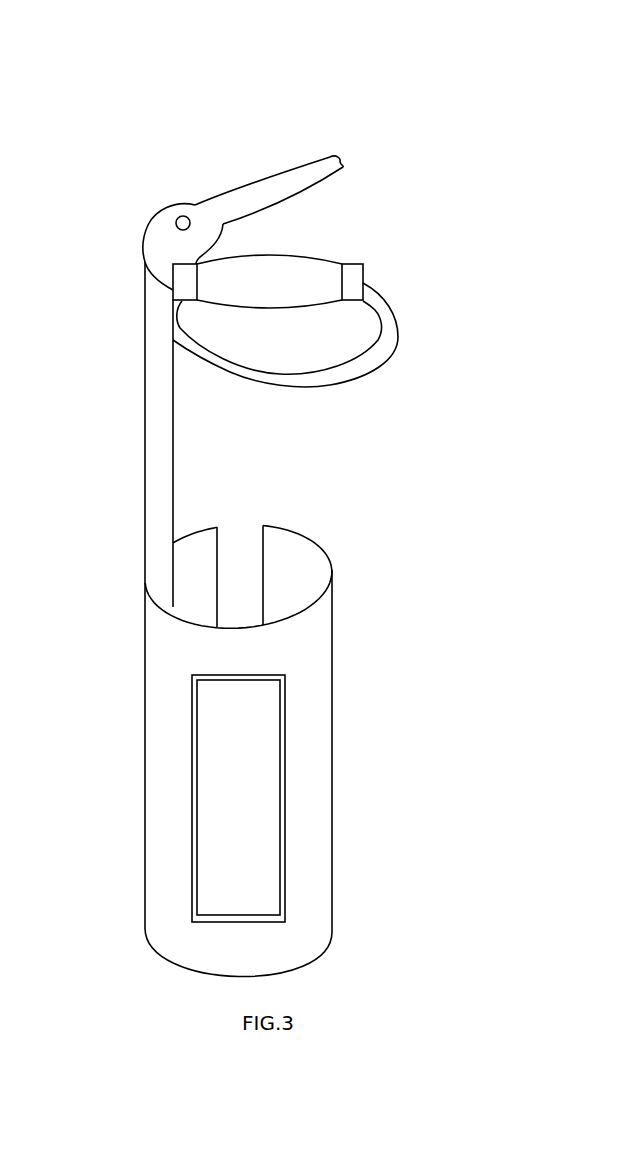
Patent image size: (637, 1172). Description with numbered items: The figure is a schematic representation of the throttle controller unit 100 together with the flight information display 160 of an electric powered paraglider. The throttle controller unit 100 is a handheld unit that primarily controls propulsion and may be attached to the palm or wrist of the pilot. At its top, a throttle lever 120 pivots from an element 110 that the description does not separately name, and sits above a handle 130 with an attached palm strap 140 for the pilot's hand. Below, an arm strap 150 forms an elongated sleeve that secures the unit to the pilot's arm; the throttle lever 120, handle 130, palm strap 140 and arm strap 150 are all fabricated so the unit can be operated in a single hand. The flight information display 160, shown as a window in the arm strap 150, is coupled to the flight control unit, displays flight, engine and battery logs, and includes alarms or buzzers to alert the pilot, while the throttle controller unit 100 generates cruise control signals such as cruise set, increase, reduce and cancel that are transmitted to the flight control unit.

The throttle controller unit 100 is at (245, 97).
The pivot head 110 is at (145, 240).
The throttle lever 120 is at (343, 164).
The handle 130 is at (365, 273).
The palm strap 140 is at (392, 350).
The arm strap 150 is at (332, 657).
The flight information display 160 is at (280, 792).